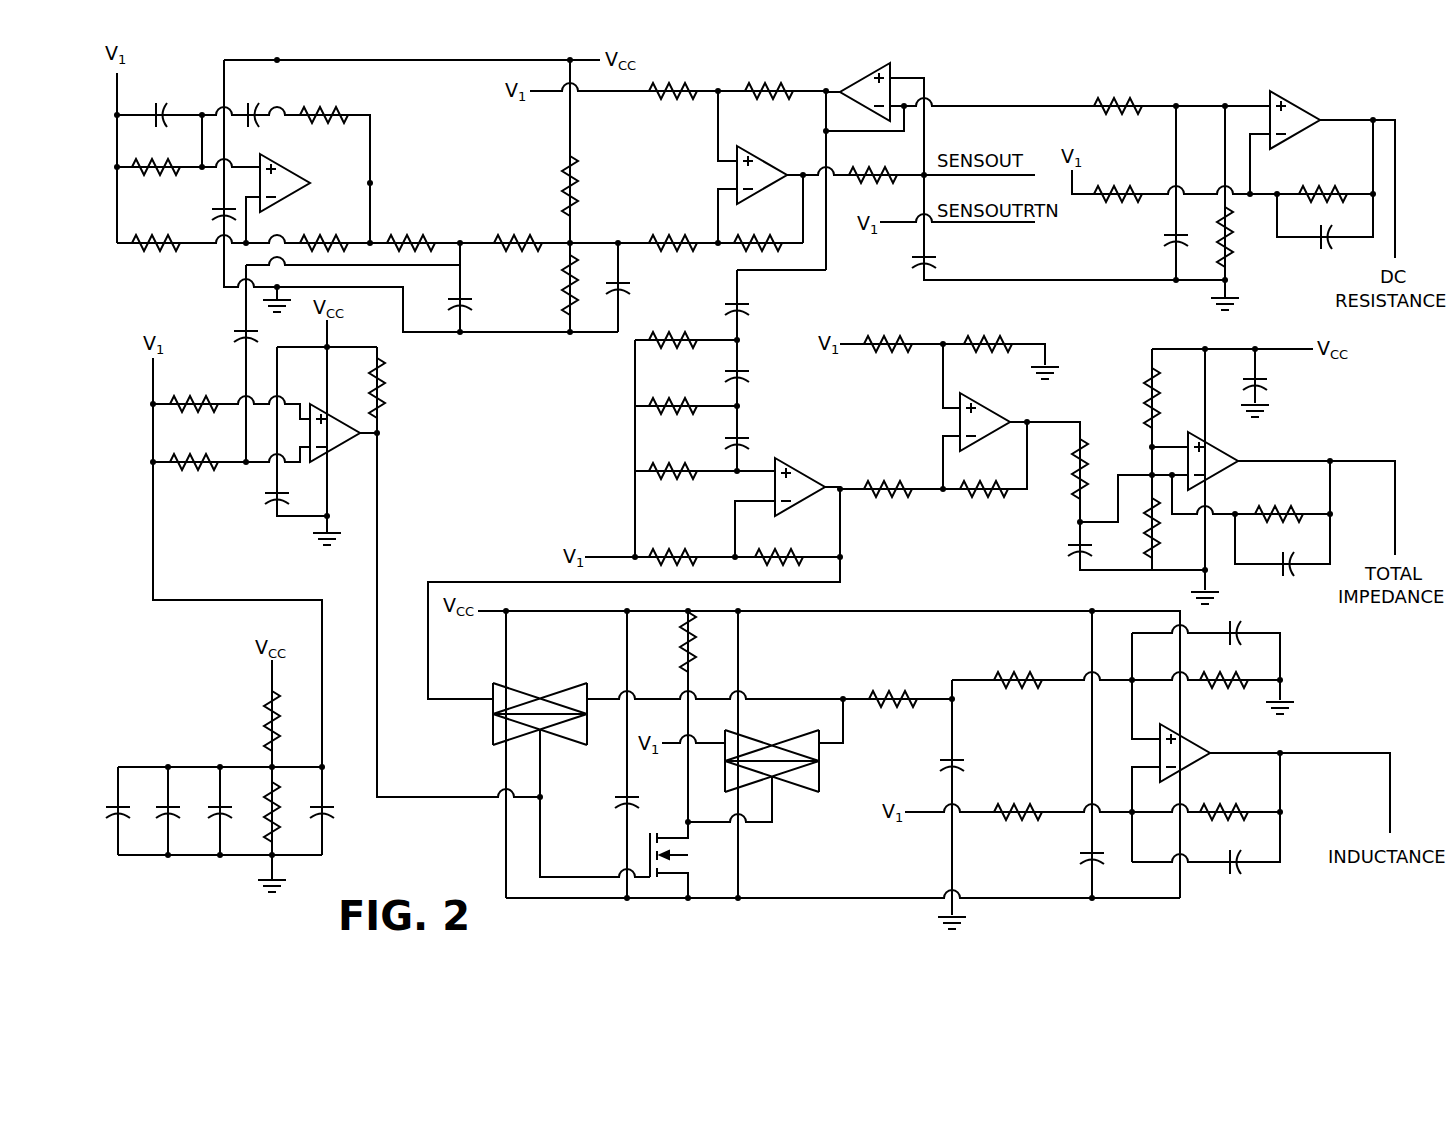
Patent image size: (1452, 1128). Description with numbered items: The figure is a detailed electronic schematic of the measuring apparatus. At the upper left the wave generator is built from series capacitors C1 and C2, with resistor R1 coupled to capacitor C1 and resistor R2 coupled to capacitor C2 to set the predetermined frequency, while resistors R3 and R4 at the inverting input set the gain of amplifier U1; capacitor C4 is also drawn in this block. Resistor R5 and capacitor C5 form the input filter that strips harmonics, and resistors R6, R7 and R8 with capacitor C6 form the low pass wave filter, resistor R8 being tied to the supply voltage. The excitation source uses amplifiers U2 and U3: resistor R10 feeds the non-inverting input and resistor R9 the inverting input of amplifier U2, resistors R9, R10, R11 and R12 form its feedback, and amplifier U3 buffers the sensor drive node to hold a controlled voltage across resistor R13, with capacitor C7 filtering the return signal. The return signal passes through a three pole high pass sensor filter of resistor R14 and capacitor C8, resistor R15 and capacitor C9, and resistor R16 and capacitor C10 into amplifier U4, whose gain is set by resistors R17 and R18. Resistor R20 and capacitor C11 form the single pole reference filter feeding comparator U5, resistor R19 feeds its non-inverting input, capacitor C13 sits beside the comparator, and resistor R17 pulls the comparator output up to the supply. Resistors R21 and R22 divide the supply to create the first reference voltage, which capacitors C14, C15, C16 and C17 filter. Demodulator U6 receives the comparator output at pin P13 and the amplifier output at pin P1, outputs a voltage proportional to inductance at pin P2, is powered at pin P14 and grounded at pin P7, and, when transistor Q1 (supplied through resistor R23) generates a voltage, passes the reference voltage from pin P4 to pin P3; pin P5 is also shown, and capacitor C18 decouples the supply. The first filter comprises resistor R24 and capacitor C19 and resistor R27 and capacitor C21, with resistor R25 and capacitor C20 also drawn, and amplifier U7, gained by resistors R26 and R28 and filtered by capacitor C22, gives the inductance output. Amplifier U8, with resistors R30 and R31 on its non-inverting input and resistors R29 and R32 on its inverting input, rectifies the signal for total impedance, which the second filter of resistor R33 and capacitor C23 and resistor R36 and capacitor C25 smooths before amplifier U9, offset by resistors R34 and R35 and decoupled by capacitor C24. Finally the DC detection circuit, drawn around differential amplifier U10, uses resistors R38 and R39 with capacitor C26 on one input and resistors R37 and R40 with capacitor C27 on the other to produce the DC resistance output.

The resistor R1 is at (156, 156).
The resistor R2 is at (324, 104).
The resistor R3 is at (156, 232).
The resistor R4 is at (324, 232).
The resistor R5 is at (411, 232).
The resistor R6 is at (518, 232).
The resistor R7 is at (556, 285).
The resistor R8 is at (556, 186).
The resistor R9 is at (673, 232).
The resistor R10 is at (673, 79).
The resistor R11 is at (769, 79).
The resistor R12 is at (758, 232).
The resistor R13 is at (873, 164).
The resistor R14 is at (673, 330).
The resistor R15 is at (673, 395).
The resistor R16 is at (673, 460).
The resistor R17 is at (533, 461).
The resistor R18 is at (780, 547).
The resistor R19 is at (194, 393).
The resistor R20 is at (194, 452).
The resistor R21 is at (293, 721).
The resistor R22 is at (293, 815).
The resistor R23 is at (669, 642).
The resistor R24 is at (893, 688).
The resistor R25 is at (1018, 670).
The resistor R26 is at (1018, 802).
The resistor R27 is at (1225, 669).
The resistor R28 is at (1225, 801).
The resistor R29 is at (889, 478).
The resistor R30 is at (889, 333).
The resistor R31 is at (988, 333).
The resistor R32 is at (984, 478).
The resistor R33 is at (1062, 469).
The resistor R34 is at (1173, 398).
The resistor R35 is at (1173, 528).
The resistor R36 is at (1279, 504).
The resistor R37 is at (1118, 182).
The resistor R38 is at (1118, 95).
The resistor R39 is at (1247, 237).
The resistor R40 is at (1323, 183).
The capacitor C1 is at (159, 104).
The capacitor C2 is at (252, 104).
The capacitor C4 is at (216, 203).
The capacitor C5 is at (452, 295).
The capacitor C6 is at (610, 277).
The capacitor C7 is at (916, 251).
The capacitor C8 is at (729, 300).
The capacitor C9 is at (728, 366).
The capacitor C10 is at (722, 433).
The capacitor C11 is at (234, 327).
The capacitor C13 is at (263, 487).
The capacitor C14 is at (132, 803).
The capacitor C15 is at (182, 803).
The capacitor C16 is at (233, 803).
The capacitor C17 is at (336, 803).
The capacitor C18 is at (613, 792).
The capacitor C19 is at (937, 753).
The capacitor C20 is at (1077, 847).
The capacitor C21 is at (1255, 628).
The capacitor C22 is at (1255, 868).
The capacitor C23 is at (1066, 539).
The capacitor C24 is at (1270, 372).
The capacitor C25 is at (1308, 571).
The capacitor C26 is at (1161, 230).
The capacitor C27 is at (1347, 245).
The amplifier U1 is at (285, 180).
The amplifier U2 is at (762, 168).
The amplifier U3 is at (865, 83).
The amplifier U4 is at (800, 480).
The comparator U5 is at (335, 430).
The demodulator U6 is at (656, 716).
The amplifier U7 is at (1186, 750).
The amplifier U8 is at (985, 415).
The amplifier U9 is at (1213, 459).
The operational amplifier U10 is at (1295, 114).
The transistor Q1 is at (687, 860).
The pin P1 is at (460, 711).
The pin P2 is at (603, 711).
The pin P3 is at (833, 756).
The pin P4 is at (710, 755).
The switch pin P5 is at (786, 799).
The pin P7 is at (492, 771).
The pin P13 is at (558, 763).
The pin P14 is at (602, 670).